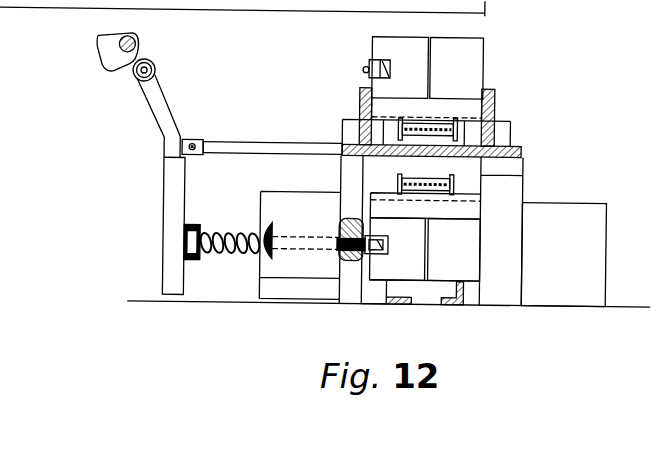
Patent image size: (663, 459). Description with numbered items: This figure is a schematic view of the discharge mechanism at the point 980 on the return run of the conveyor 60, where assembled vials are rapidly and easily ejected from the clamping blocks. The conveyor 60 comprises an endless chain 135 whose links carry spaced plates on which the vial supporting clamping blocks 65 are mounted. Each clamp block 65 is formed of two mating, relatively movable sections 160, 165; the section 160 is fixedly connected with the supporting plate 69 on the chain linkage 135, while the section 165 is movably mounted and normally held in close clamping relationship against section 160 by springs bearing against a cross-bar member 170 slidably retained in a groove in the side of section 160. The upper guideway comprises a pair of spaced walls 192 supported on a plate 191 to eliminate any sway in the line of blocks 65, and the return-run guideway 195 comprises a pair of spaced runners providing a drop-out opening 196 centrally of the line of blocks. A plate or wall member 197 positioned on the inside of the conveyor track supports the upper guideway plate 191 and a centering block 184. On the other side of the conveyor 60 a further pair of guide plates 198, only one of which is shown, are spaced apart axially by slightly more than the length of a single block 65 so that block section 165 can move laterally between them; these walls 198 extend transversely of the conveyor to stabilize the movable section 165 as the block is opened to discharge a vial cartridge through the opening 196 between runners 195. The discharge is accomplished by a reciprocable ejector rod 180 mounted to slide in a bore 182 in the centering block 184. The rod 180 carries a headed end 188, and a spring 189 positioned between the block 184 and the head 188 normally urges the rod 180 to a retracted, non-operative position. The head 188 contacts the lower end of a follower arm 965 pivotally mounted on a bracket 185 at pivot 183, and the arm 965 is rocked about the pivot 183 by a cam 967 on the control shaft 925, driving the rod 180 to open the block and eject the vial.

The cam 967 is at (104, 51).
The control shaft 925 is at (134, 40).
The follower arm 965 is at (151, 86).
The pivot 183 is at (194, 144).
The bracket 185 is at (253, 144).
The discharge point 980 is at (276, 191).
The plate or wall member 197 is at (348, 186).
The bore 182 is at (305, 232).
The headed end 188 is at (196, 227).
The spring 189 is at (241, 252).
The ejector rod 180 is at (261, 229).
The centering block 184 is at (306, 274).
The plate 191 is at (520, 148).
The guide plates 198 is at (514, 202).
The spaced walls 192 is at (360, 95).
The supporting plate 69 is at (380, 109).
The block section 160 is at (390, 44).
The block section 165 is at (465, 47).
The clamping block 65 is at (485, 58).
The cross-bar member 170 is at (369, 62).
The endless chain 135 is at (431, 177).
The drop-out opening 196 is at (425, 302).
The guide structure 195 is at (458, 304).
The conveyor 60 is at (376, 296).